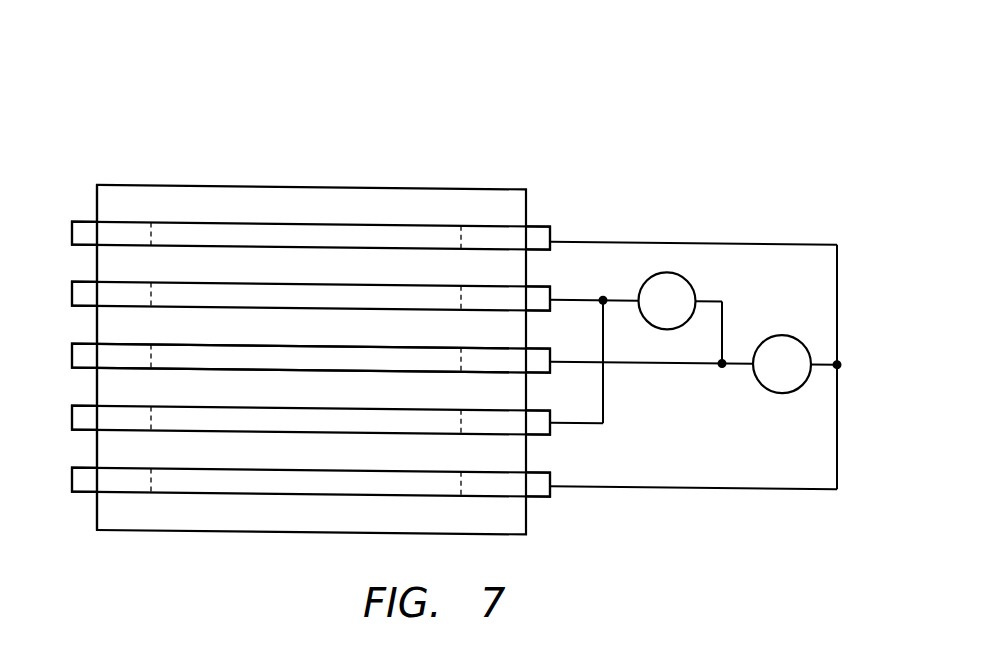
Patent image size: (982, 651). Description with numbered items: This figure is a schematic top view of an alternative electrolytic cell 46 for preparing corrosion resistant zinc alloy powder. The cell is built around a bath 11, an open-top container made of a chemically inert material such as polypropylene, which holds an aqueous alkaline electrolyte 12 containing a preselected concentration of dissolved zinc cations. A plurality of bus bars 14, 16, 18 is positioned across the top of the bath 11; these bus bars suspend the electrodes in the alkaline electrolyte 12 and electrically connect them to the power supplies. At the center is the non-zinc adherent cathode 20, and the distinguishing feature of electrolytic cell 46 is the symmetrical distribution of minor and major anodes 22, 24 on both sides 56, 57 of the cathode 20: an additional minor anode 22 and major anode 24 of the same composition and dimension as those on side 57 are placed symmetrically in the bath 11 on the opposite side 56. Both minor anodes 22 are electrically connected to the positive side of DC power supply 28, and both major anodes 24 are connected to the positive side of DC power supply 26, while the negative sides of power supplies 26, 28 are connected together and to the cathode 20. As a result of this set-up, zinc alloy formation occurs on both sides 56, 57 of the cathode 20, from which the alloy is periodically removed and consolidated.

The bath 11 is at (196, 185).
The alkaline electrolyte 12 is at (115, 264).
The bus bar 14 is at (548, 349).
The bus bar 16 is at (542, 286).
The bus bar 18 is at (85, 222).
The non-zinc adherent cathode 20 is at (315, 363).
The minor anode 22 is at (320, 363).
The major anode 24 is at (330, 359).
The DC power supply 26 is at (780, 335).
The DC power supply 28 is at (690, 282).
The electrolytic cell 46 is at (322, 336).
The side of the cathode 56 is at (178, 368).
The side of the cathode 57 is at (178, 344).